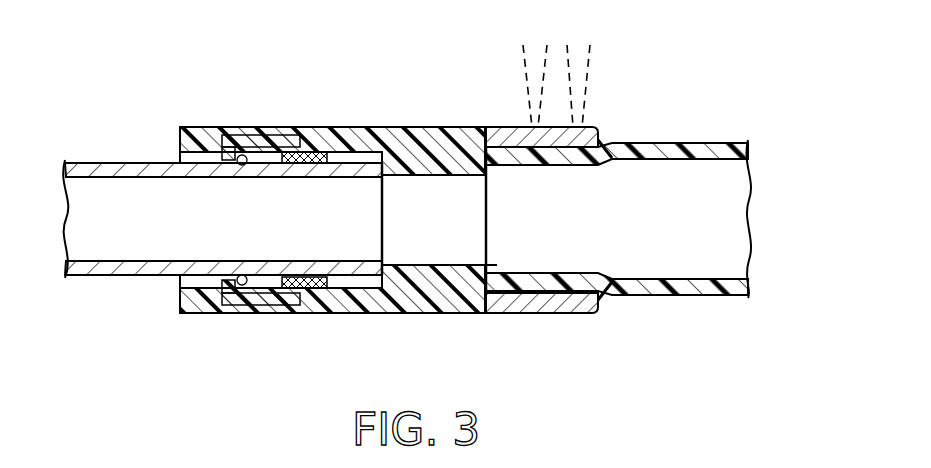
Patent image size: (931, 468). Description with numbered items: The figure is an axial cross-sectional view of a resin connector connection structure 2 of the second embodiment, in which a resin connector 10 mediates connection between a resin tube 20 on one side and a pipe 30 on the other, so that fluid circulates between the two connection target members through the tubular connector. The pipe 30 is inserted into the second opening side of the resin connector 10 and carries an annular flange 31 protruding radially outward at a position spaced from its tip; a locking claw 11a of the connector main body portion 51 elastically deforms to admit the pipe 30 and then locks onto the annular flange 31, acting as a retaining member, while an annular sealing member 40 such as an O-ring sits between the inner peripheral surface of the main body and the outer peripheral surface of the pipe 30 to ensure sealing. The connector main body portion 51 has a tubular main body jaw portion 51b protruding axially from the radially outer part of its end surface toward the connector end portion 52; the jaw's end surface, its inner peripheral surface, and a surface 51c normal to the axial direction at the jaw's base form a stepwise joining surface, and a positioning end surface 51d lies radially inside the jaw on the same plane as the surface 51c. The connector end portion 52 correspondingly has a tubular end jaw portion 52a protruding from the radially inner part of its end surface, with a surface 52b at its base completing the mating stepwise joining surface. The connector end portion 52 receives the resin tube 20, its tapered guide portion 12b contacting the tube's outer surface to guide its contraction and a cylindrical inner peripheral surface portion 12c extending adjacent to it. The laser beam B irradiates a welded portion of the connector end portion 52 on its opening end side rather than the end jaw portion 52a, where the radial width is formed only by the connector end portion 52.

The resin connector connection structure 2 is at (438, 204).
The resin connector 10 is at (425, 200).
The locking claw 11a is at (235, 140).
The guide portion 12b is at (633, 291).
The cylindrical inner peripheral surface portion 12c is at (568, 270).
The resin tube 20 is at (625, 274).
The pipe 30 is at (93, 276).
The annular flange 31 is at (240, 285).
The sealing member 40 is at (352, 279).
The connector main body portion 51 is at (400, 127).
The main body jaw portion 51b is at (513, 127).
The surface 51c is at (538, 300).
The positioning end surface 51d is at (490, 273).
The connector end portion 52 is at (485, 127).
The end jaw portion 52a is at (512, 158).
The surface 52b is at (505, 296).
The laser beam B is at (587, 71).